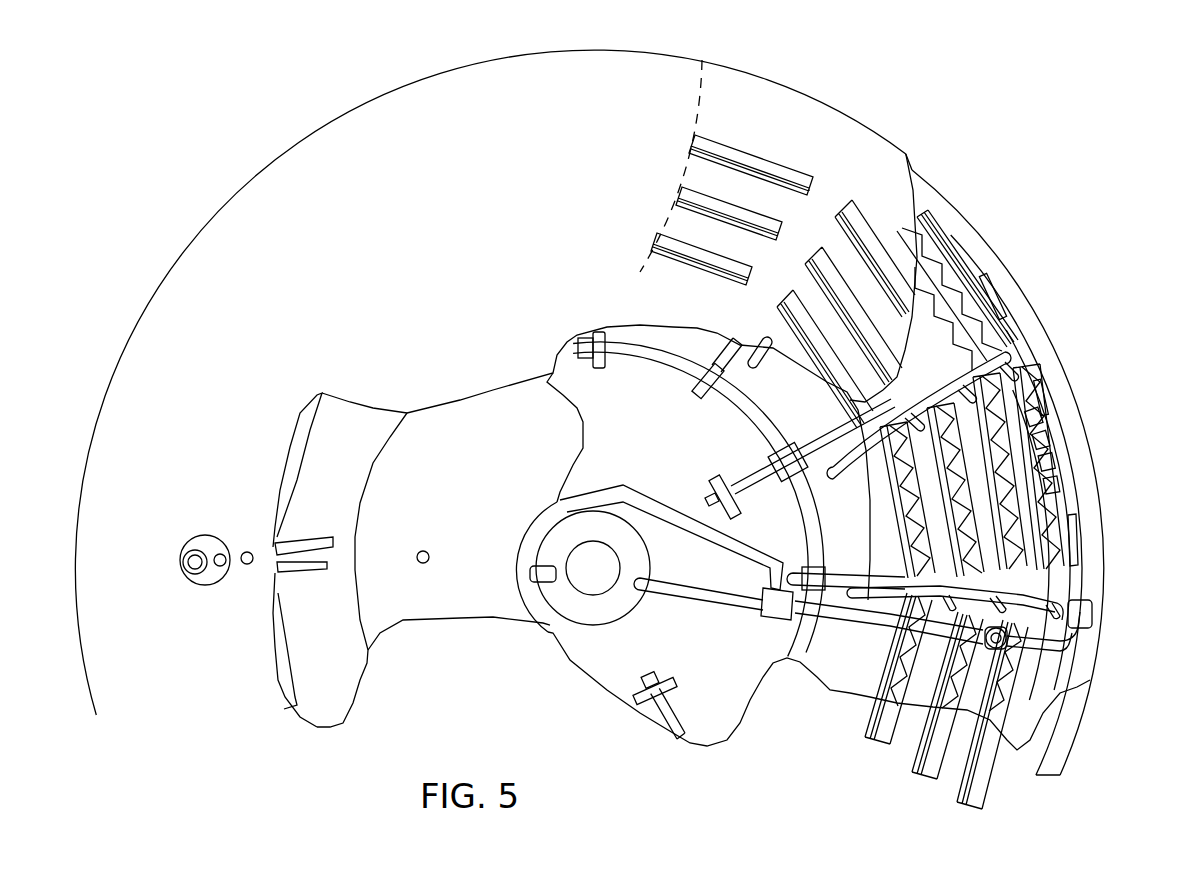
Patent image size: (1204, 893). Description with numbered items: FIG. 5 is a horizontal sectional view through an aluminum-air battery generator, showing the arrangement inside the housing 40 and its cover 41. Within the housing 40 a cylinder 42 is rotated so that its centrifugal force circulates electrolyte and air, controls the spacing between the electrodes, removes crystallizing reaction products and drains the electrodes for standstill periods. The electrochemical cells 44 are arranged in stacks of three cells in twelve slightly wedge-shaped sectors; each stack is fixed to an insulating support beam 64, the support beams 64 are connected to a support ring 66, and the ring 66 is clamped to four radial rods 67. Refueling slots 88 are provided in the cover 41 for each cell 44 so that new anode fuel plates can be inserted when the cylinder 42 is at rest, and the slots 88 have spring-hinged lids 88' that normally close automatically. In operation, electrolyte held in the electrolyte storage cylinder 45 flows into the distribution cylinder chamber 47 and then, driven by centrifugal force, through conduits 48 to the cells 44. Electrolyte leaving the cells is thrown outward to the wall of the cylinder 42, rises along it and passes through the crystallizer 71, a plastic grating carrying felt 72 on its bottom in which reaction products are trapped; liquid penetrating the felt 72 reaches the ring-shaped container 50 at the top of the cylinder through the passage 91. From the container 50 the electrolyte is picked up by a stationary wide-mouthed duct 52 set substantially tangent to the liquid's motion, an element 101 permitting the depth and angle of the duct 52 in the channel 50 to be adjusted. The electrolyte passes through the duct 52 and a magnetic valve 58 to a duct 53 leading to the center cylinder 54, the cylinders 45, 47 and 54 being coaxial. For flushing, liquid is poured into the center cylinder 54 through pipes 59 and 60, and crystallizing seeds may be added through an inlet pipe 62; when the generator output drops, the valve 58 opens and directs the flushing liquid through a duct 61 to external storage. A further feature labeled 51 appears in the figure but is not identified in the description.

The housing 40 is at (1028, 295).
The cover 41 is at (838, 107).
The cylinder 42 is at (983, 277).
The electrochemical cells 44 is at (935, 257).
The electrolyte storage cylinder 45 is at (443, 428).
The distribution cylinder chamber 47 is at (750, 385).
The conduits 48 is at (990, 366).
The ring shaped container 50 is at (1095, 606).
The hole 51 is at (423, 551).
The wide-mouthed duct 52 is at (1074, 642).
The duct 53 is at (688, 588).
The center cylinder 54 is at (553, 543).
The magnetic valve 58 is at (772, 612).
The pipe 59 is at (223, 566).
The pipe 60 is at (543, 582).
The duct 61 is at (247, 552).
The inlet pipe 62 is at (196, 568).
The insulating support beam 64 is at (838, 580).
The support ring 66 is at (758, 422).
The radial rods 67 is at (767, 482).
The crystallizer 71 is at (1062, 447).
The felt 72 is at (1072, 480).
The refueling slots 88 is at (754, 160).
The spring-hinged lids 88' is at (716, 193).
The passage 91 is at (1085, 535).
The duct adjusting element 101 is at (1022, 732).